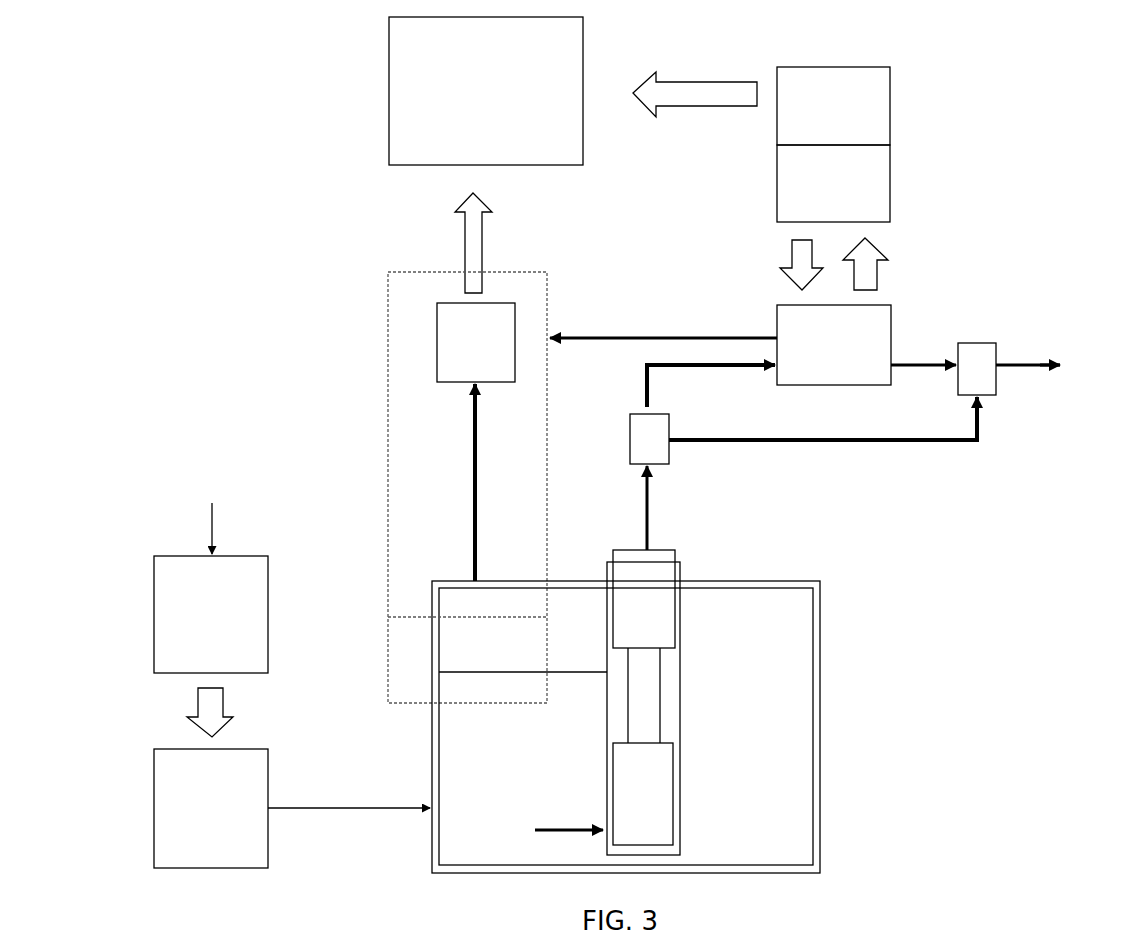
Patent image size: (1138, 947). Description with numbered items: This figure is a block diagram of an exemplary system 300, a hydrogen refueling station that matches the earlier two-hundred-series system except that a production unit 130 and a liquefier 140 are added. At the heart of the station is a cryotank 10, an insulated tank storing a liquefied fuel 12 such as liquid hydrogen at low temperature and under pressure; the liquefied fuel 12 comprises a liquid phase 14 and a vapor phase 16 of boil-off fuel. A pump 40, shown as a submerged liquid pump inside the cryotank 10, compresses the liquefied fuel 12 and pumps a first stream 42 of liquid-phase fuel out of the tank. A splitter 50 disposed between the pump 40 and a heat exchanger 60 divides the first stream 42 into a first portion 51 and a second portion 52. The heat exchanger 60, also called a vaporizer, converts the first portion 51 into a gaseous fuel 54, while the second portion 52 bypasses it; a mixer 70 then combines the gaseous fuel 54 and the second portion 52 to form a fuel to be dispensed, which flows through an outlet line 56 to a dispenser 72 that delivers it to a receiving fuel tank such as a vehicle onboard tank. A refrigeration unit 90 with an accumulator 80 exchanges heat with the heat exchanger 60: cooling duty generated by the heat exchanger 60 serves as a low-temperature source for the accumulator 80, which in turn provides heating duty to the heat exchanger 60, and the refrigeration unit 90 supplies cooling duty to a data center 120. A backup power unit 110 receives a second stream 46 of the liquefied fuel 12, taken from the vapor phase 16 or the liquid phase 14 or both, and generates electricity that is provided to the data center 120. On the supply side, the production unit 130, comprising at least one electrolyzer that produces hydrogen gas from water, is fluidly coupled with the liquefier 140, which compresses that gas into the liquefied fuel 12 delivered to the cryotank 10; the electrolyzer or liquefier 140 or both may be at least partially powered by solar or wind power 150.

The exemplary system 300 is at (178, 148).
The data center 120 is at (389, 52).
The backup power unit 110 is at (437, 340).
The refrigeration unit 90 is at (893, 92).
The accumulator 80 is at (893, 163).
The heat exchanger 60 is at (880, 385).
The mixer 70 is at (998, 390).
The dispenser 72 is at (1075, 368).
The exhaust line 56 is at (1048, 355).
The gaseous fuel 54 is at (641, 336).
The second portion 52 is at (848, 445).
The first portion 51 is at (722, 360).
The splitter 50 is at (632, 414).
The second stream 46 is at (470, 458).
The first stream 42 is at (617, 497).
The pump 40 is at (675, 556).
The cryotank 10 is at (820, 650).
The liquefied fuel 12 is at (545, 830).
The liquid phase 14 is at (460, 722).
The vapor phase 16 is at (453, 645).
The production unit 130 is at (154, 572).
The liquefier 140 is at (154, 768).
The solar or wind power 150 is at (212, 514).